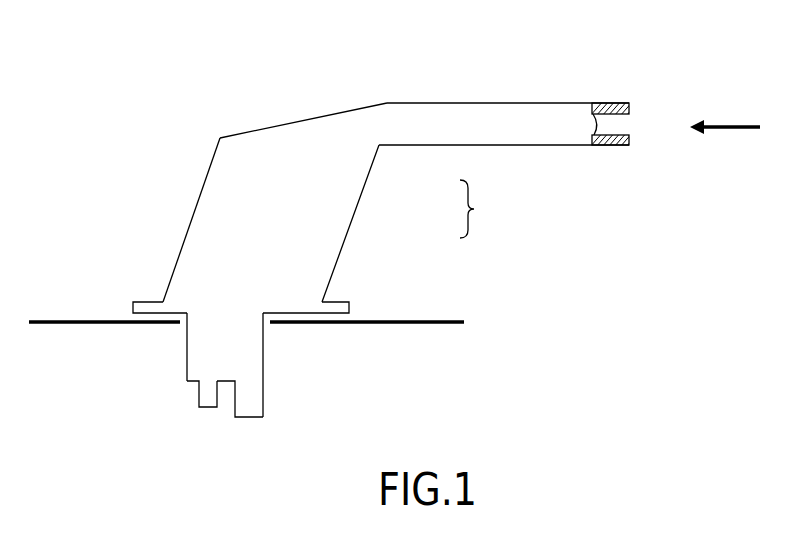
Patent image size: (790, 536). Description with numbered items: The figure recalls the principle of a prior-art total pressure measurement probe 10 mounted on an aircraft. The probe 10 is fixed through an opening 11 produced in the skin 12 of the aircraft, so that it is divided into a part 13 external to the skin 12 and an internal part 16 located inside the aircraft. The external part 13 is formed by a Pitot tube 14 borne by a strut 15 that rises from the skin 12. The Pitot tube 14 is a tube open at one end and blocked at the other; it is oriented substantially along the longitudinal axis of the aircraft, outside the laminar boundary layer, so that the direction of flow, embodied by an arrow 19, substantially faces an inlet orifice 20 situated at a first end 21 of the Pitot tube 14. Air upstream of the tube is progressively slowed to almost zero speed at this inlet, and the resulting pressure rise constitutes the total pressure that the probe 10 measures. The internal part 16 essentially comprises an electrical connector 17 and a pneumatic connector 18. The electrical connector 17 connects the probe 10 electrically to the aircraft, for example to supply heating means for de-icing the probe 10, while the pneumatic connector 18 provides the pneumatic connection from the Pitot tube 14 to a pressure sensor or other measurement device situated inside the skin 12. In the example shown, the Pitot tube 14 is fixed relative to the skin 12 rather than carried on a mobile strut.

The probe 10 is at (182, 116).
The opening 11 is at (267, 322).
The skin 12 is at (405, 321).
The external part 13 is at (482, 209).
The Pitot tube 14 is at (403, 145).
The strut 15 is at (350, 230).
The internal part 16 is at (235, 361).
The electrical connector 17 is at (250, 400).
The pneumatic connector 18 is at (207, 392).
The arrow 19 is at (730, 127).
The inlet orifice 20 is at (620, 126).
The first end 21 is at (614, 103).